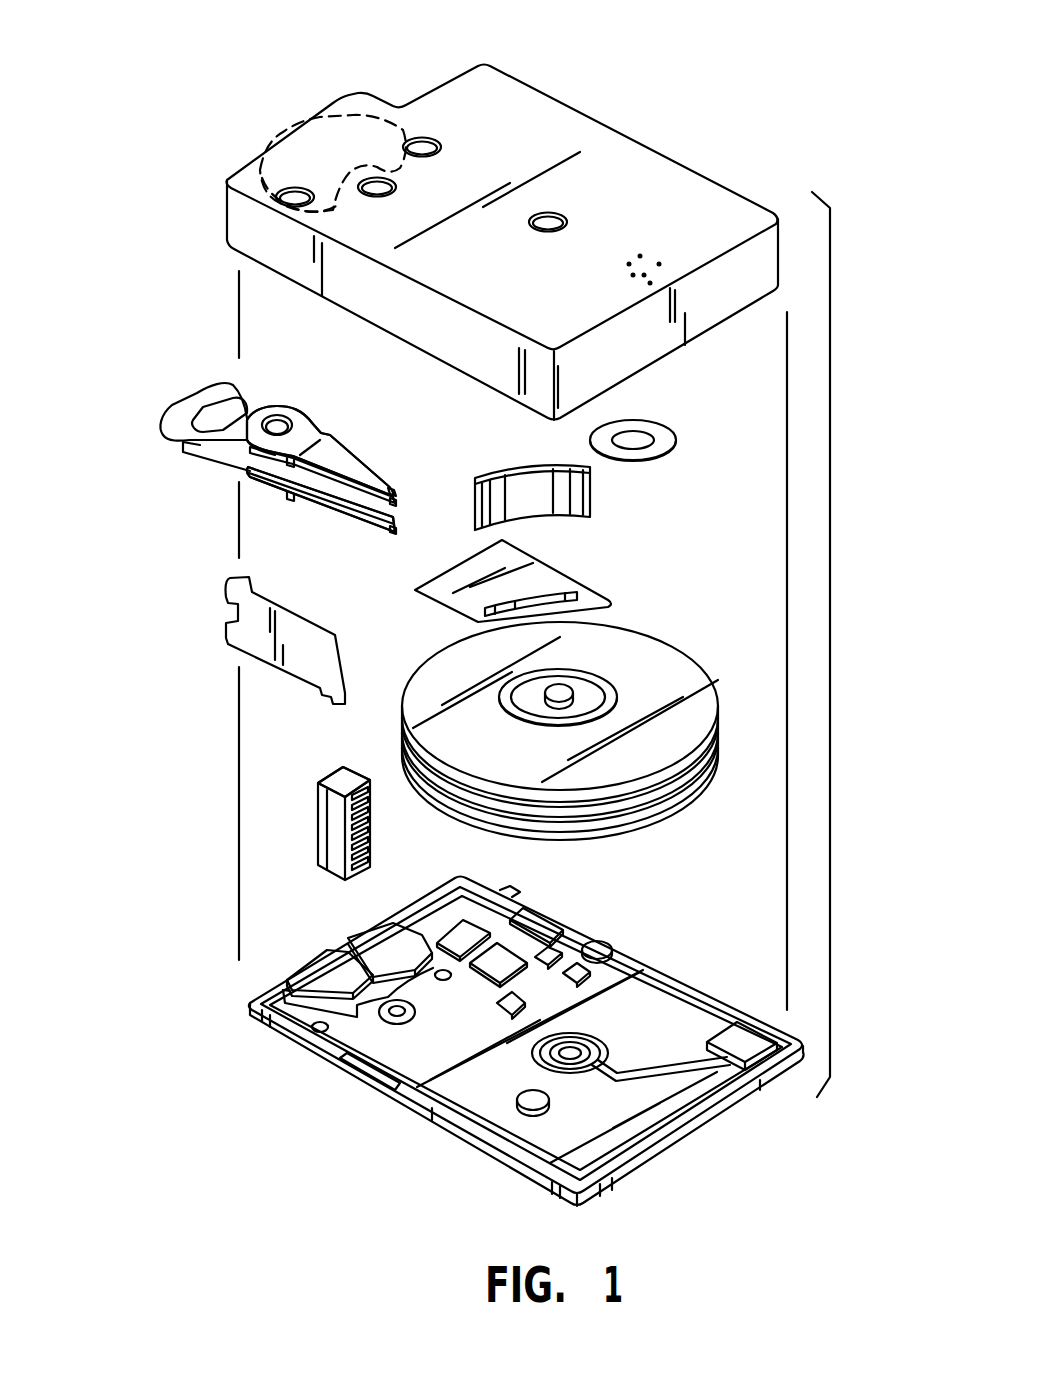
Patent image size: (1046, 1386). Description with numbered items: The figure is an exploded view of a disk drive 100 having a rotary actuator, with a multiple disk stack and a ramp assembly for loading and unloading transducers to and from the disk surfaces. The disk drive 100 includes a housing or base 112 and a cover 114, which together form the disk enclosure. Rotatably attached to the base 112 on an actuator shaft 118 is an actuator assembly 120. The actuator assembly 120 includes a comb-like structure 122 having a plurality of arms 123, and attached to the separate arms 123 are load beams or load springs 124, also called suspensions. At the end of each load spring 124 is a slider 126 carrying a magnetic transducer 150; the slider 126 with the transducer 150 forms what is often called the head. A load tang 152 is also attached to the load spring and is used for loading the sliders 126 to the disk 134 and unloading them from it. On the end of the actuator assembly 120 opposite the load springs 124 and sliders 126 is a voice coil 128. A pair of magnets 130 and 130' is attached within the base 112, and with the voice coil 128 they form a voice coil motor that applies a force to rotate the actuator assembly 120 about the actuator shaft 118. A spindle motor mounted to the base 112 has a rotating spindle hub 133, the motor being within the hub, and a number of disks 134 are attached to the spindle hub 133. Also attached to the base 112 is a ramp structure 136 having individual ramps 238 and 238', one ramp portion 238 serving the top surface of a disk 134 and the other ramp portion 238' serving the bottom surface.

The disk drive 100 is at (650, 97).
The base 112 is at (693, 1007).
The cover 114 is at (665, 180).
The actuator shaft 118 is at (275, 413).
The actuator assembly 120 is at (213, 455).
The comb-like structure 122 is at (304, 504).
The arms 123 is at (313, 418).
The load springs 124 is at (358, 470).
The slider 126 is at (395, 492).
The voice coil 128 is at (190, 403).
The magnet 130 is at (289, 947).
The magnet 130' is at (324, 141).
The spindle hub 133 is at (562, 690).
The disks 134 is at (687, 670).
The ramp structure 136 is at (325, 827).
The magnetic transducer 150 is at (396, 504).
The load tang 152 is at (396, 528).
The ramp portion 238 is at (321, 756).
The ramp portion 238' is at (396, 828).